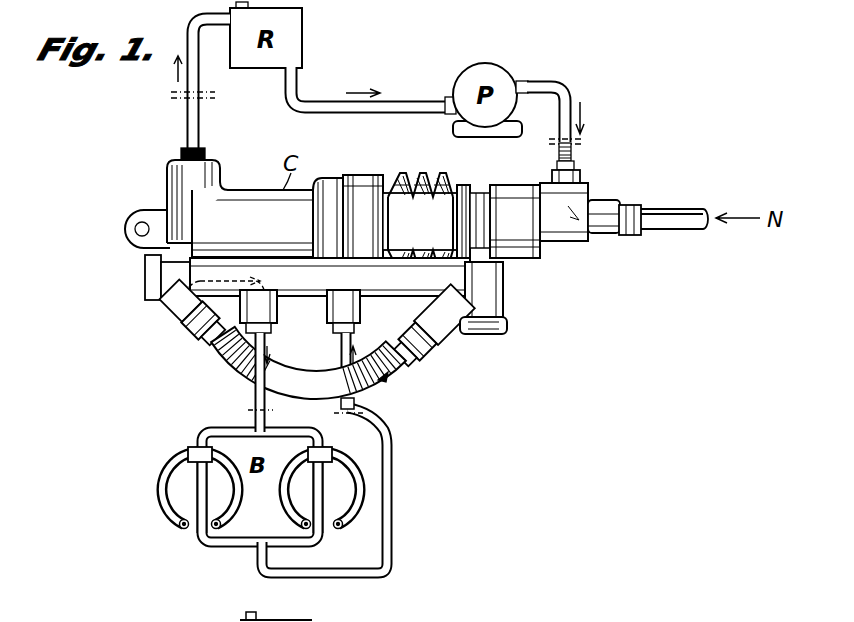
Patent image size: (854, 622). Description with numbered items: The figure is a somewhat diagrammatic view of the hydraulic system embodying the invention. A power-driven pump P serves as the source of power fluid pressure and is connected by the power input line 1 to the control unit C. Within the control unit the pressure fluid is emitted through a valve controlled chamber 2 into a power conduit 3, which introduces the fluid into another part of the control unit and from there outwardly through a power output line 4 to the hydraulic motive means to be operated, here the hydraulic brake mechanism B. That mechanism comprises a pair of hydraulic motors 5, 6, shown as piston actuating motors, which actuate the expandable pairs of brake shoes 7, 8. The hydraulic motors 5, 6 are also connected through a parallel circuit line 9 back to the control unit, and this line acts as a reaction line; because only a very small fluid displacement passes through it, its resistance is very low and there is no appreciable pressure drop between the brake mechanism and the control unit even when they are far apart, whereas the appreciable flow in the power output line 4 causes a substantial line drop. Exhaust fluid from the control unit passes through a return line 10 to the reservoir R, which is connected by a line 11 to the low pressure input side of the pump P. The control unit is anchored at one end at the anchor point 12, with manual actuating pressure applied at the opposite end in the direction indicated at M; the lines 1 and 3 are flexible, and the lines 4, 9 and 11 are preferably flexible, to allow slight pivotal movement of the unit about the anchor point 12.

The power input line 1 is at (572, 158).
The valve controlled chamber 2 is at (525, 260).
The power conduit 3 is at (221, 363).
The power output line 4 is at (253, 392).
The hydraulic motor 5 is at (197, 450).
The hydraulic motor 6 is at (323, 455).
The pair of brake shoes 7 is at (237, 483).
The pair of brake shoes 8 is at (353, 493).
The parallel circuit line 9 is at (381, 424).
The return line 10 is at (188, 115).
The line 11 is at (405, 99).
The anchor point 12 is at (125, 229).